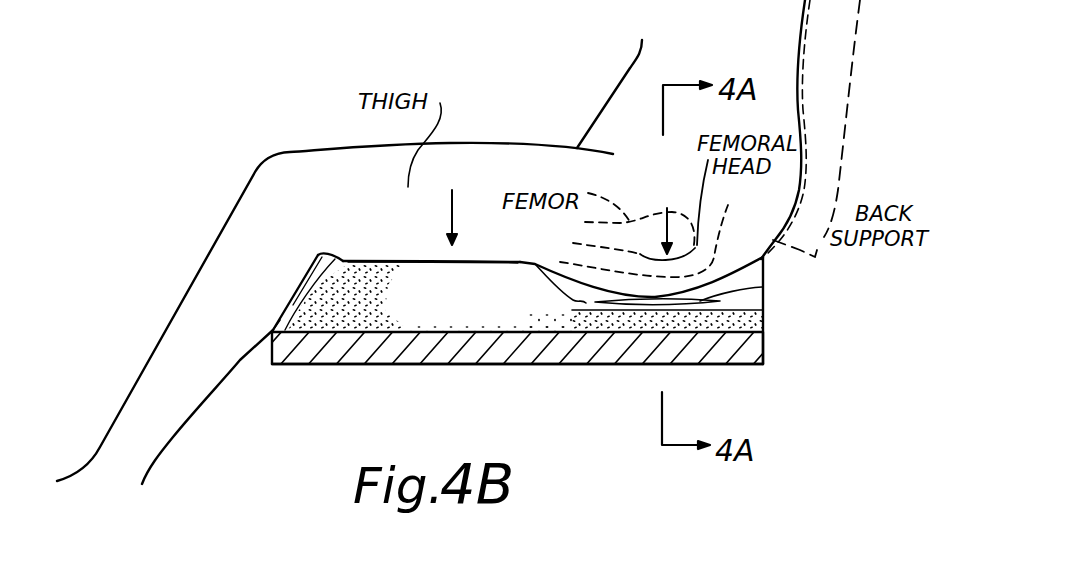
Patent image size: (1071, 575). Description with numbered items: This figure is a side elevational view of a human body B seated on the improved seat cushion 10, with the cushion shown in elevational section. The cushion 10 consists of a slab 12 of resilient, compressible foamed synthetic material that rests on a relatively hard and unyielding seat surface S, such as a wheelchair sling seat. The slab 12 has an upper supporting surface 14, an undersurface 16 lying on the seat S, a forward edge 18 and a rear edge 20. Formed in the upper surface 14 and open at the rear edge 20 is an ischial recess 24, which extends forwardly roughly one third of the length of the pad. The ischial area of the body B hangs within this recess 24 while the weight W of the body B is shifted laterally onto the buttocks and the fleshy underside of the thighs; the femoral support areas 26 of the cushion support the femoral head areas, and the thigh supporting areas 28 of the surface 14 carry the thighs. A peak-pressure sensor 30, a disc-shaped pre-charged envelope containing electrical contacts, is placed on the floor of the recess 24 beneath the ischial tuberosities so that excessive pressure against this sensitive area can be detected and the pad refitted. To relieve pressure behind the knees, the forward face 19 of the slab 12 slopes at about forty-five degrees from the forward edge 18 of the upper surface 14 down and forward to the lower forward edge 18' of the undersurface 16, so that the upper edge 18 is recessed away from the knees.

The seat cushion 10 is at (774, 322).
The slab 12 is at (398, 311).
The upper supporting surface 14 is at (536, 262).
The undersurface 16 is at (502, 334).
The forward edge 18 is at (303, 255).
The lower forward edge 18' is at (236, 337).
The forward face 19 is at (307, 285).
The rear edge 20 is at (766, 272).
The ischial recess 24 is at (575, 305).
The buttock supporting areas 26 is at (730, 204).
The thigh supporting areas 28 is at (395, 258).
The peak-pressure sensor 30 is at (766, 291).
The seat surface S is at (685, 355).
The body B is at (609, 79).
The weight W is at (561, 207).